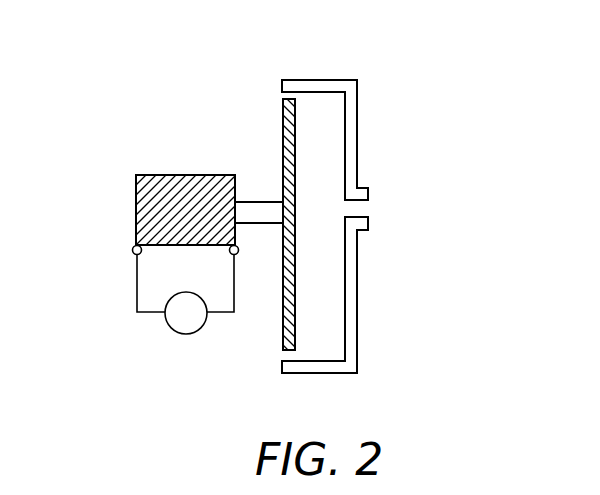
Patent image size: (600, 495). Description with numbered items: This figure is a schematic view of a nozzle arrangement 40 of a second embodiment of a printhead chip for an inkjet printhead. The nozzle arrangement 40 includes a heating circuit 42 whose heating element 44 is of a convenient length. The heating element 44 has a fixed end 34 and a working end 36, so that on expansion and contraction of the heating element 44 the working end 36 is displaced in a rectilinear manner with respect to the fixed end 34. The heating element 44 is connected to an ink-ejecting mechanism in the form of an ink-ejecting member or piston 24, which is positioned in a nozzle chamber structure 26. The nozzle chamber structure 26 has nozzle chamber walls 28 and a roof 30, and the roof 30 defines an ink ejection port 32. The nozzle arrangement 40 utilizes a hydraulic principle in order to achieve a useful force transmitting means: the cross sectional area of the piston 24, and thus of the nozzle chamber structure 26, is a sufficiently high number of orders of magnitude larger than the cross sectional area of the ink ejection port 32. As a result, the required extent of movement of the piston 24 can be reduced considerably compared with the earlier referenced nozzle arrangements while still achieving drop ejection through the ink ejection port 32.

The piston 24 is at (293, 337).
The nozzle chamber structure 26 is at (326, 167).
The nozzle chamber walls 28 is at (333, 80).
The roof 30 is at (357, 292).
The ink ejection port 32 is at (378, 208).
The fixed end 34 is at (184, 176).
The working end 36 is at (233, 178).
The nozzle arrangement 40 is at (464, 110).
The heating circuit 42 is at (137, 277).
The heating element 44 is at (168, 178).